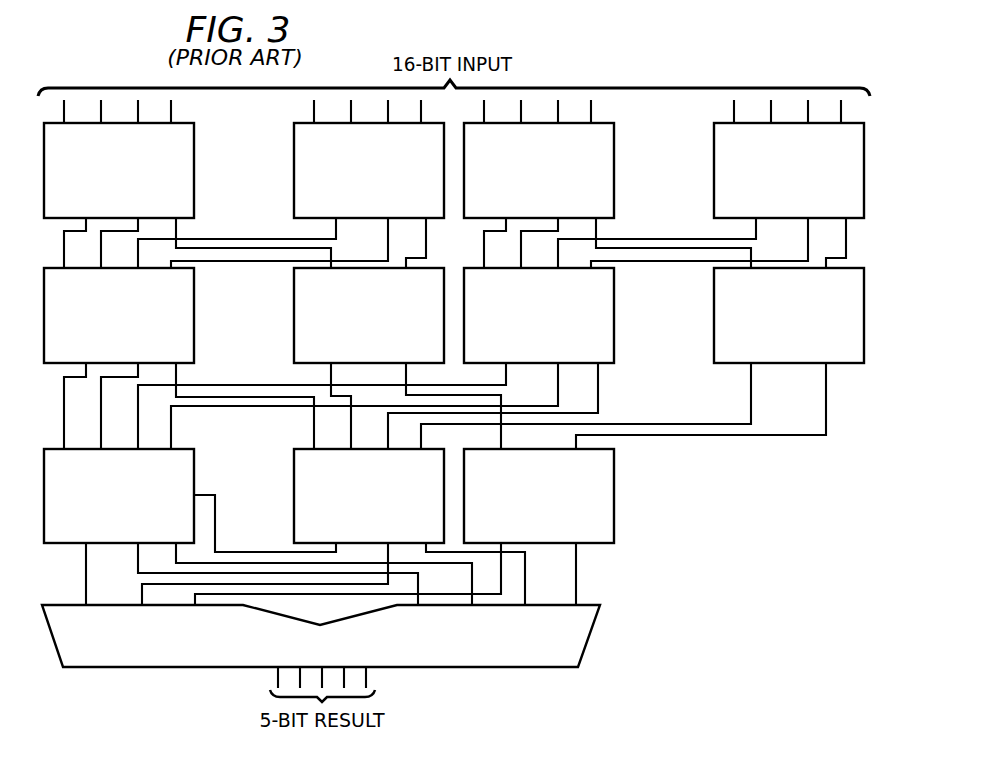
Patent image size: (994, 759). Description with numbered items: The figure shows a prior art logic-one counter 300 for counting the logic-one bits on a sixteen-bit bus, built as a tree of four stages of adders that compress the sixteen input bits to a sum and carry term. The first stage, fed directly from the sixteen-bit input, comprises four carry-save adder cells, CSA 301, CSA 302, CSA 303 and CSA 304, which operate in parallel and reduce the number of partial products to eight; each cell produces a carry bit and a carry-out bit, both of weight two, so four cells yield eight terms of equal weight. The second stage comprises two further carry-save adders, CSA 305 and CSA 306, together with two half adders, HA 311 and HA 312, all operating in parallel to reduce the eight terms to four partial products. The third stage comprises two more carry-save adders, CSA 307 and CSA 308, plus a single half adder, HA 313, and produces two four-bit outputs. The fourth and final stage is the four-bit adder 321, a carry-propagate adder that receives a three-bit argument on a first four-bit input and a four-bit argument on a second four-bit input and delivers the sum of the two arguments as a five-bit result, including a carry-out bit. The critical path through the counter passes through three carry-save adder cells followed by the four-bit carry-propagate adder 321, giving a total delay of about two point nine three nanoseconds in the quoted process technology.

The Logic 1 counter 300 is at (648, 65).
The CSA42 301 is at (196, 166).
The CSA42 302 is at (292, 173).
The CSA42 303 is at (616, 165).
The CSA42 304 is at (712, 171).
The CSA42 305 is at (196, 315).
The CSA42 306 is at (616, 313).
The CSA42 307 is at (196, 483).
The CSA42 308 is at (292, 497).
The HA 311 is at (292, 319).
The HA 312 is at (712, 317).
The HA 313 is at (619, 489).
The 4-bit adder 321 is at (601, 636).